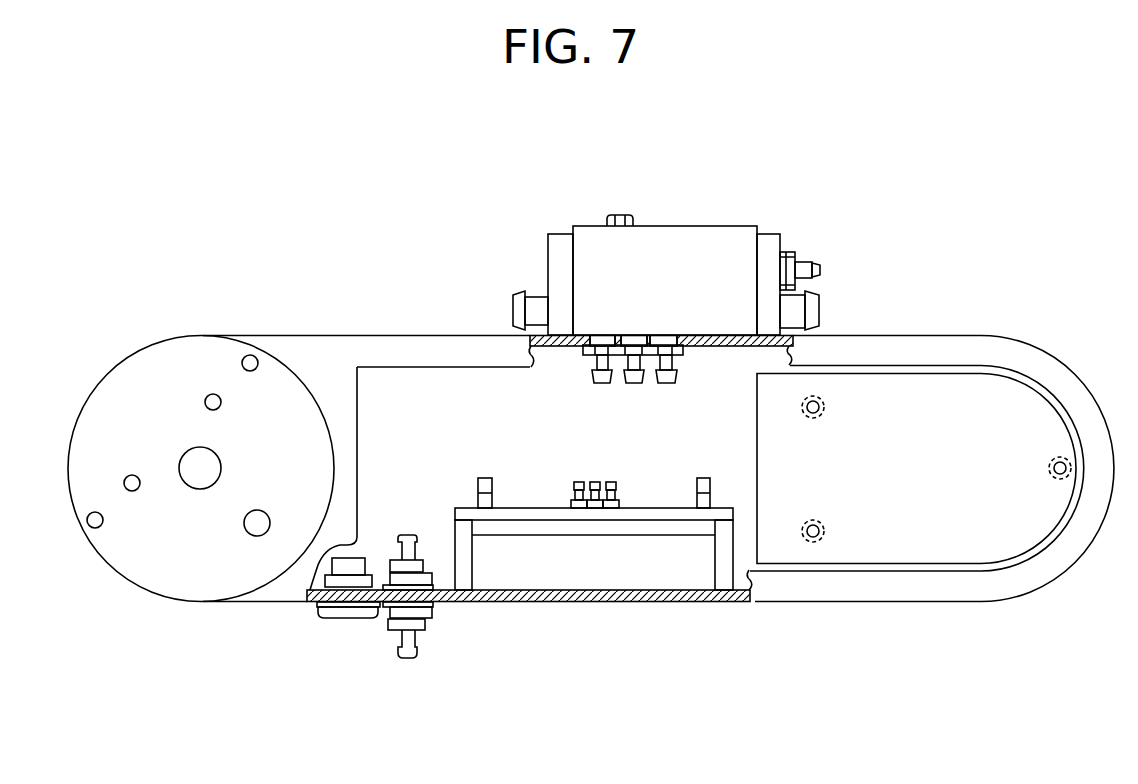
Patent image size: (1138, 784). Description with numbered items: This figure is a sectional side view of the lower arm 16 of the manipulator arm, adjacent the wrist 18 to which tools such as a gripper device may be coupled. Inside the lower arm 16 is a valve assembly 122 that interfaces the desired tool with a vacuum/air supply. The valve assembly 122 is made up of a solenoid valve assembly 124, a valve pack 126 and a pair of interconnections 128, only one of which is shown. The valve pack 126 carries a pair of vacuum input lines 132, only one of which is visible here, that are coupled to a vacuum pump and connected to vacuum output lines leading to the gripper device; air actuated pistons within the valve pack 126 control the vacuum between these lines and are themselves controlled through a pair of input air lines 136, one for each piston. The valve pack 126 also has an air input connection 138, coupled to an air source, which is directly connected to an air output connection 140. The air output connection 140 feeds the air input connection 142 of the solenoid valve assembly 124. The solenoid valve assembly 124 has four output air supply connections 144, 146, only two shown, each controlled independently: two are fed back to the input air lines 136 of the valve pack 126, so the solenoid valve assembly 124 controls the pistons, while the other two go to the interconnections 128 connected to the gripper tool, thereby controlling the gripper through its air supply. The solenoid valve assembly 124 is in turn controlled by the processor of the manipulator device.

The lower arm 16 is at (870, 583).
The wrist 18 is at (148, 555).
The valve assembly 122 is at (466, 277).
The solenoid valve assembly 124 is at (632, 567).
The valve pack 126 is at (678, 242).
The interconnections 128 is at (432, 630).
The vacuum input lines 132 is at (538, 302).
The input air lines 136 is at (630, 362).
The air input connection 138 is at (817, 267).
The air output connection 140 is at (672, 377).
The air input connection 142 is at (593, 482).
The output air supply connection 144 is at (617, 485).
The output air supply connection 146 is at (575, 484).